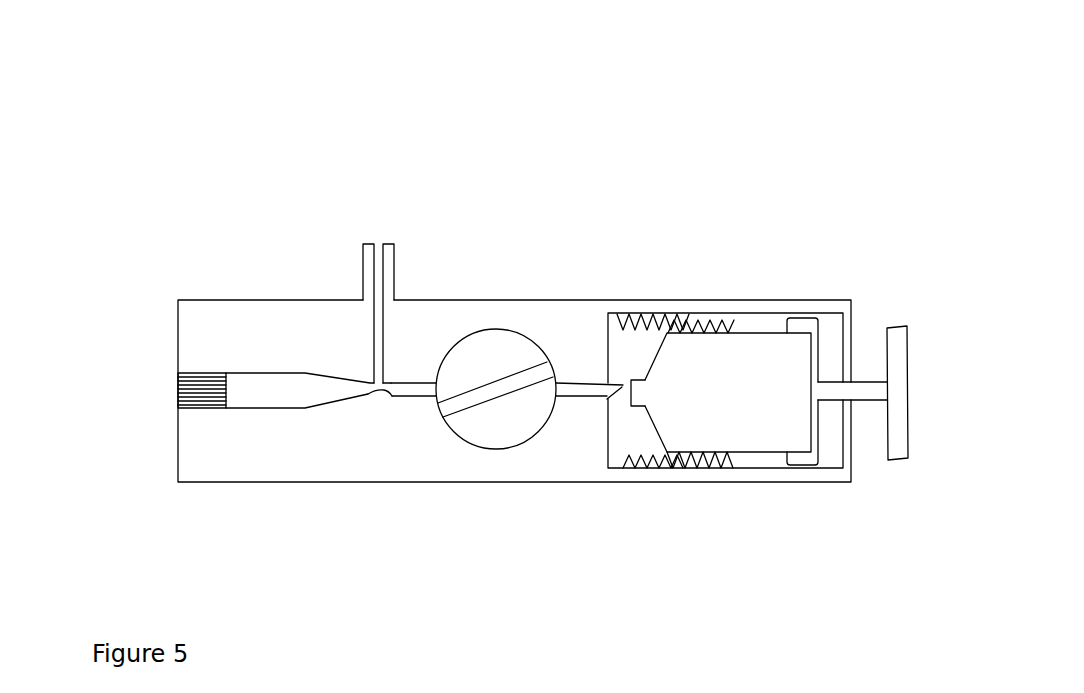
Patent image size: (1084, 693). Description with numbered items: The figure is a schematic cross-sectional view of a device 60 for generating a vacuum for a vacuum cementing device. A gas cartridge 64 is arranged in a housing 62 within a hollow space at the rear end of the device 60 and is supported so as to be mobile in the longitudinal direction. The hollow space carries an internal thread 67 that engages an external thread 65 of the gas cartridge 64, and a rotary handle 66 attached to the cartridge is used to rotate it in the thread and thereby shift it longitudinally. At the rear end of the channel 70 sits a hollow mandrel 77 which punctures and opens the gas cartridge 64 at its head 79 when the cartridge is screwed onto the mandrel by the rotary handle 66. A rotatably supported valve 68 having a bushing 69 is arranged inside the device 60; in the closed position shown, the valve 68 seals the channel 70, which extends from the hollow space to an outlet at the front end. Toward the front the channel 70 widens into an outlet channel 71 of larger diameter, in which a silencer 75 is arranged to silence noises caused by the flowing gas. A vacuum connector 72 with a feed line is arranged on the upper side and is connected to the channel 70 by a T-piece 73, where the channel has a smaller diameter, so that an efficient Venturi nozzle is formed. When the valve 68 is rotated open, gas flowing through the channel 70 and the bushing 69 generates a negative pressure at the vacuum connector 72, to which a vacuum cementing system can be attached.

The device 60 is at (215, 120).
The housing 62 is at (358, 460).
The gas cartridge 64 is at (738, 390).
The external thread 65 is at (712, 320).
The rotary handle 66 is at (898, 370).
The internal thread 67 is at (678, 320).
The valve 68 is at (503, 345).
The bushing 69 is at (470, 396).
The channel 70 is at (575, 388).
The outlet channel 71 is at (278, 392).
The vacuum connector 72 is at (373, 230).
The T-piece 73 is at (376, 388).
The silencer 75 is at (202, 406).
The hollow mandrel 77 is at (613, 371).
The head 79 is at (641, 376).